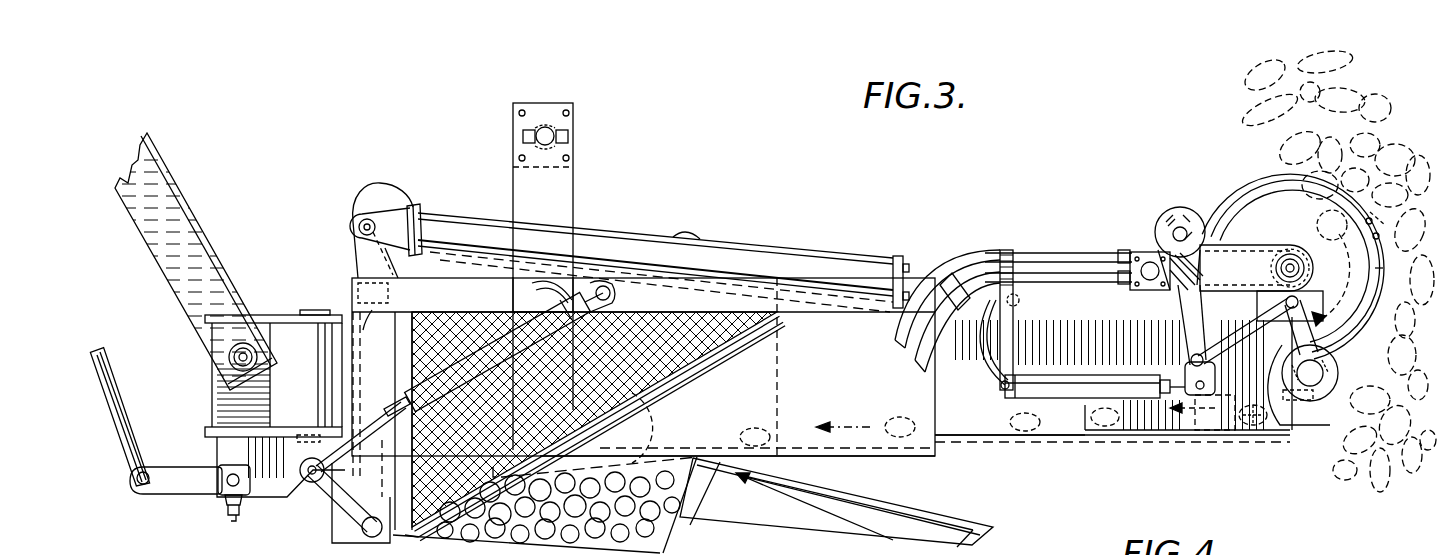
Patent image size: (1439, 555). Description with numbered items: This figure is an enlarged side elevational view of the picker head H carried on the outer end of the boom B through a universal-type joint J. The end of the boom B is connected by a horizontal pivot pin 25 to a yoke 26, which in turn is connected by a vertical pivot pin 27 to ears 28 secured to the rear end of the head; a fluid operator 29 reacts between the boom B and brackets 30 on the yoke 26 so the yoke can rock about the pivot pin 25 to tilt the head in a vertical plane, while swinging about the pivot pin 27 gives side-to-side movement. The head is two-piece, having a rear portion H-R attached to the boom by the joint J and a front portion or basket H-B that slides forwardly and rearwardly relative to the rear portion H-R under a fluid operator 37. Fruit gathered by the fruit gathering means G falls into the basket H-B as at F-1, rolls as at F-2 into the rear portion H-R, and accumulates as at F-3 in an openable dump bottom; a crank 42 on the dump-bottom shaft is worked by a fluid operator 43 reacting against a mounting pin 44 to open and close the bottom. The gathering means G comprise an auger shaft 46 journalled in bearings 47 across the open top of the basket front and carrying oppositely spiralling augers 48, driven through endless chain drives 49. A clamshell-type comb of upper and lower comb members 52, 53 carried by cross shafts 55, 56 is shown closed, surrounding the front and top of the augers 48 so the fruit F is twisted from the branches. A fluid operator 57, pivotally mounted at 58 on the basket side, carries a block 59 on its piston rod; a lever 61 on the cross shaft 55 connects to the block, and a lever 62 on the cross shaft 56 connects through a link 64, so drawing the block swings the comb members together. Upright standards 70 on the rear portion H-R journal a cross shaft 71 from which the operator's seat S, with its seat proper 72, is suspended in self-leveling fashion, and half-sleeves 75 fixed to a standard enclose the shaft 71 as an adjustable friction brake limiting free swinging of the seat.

The boom B is at (192, 214).
The universal-type joint J is at (245, 395).
The operator's seat S is at (388, 187).
The fruit F is at (1396, 240).
The fruit gathering means G is at (1377, 268).
The picker head H is at (808, 465).
The rear portion of the picker head H-R is at (860, 457).
The front portion or basket H-B is at (1005, 442).
The fruit falling into basket F-1 is at (1258, 436).
The fruit rolling into rear portion F-2 is at (906, 415).
The fruit accumulating in dump bottom F-3 is at (665, 535).
The horizontal pivot pin 25 is at (247, 357).
The yoke 26 is at (230, 418).
The vertical pivot pin 27 is at (312, 315).
The ears 28 is at (345, 338).
The fluid operator 29 is at (125, 428).
The brackets 30 is at (200, 484).
The fluid operator 37 is at (642, 245).
The crank 42 is at (340, 507).
The fluid operator 43 is at (507, 330).
The mounting pin 44 is at (606, 287).
The auger shaft 46 is at (1298, 260).
The bearings 47 is at (1284, 262).
The augers 48 is at (1368, 298).
The endless chain drives 49 is at (1233, 250).
The upper comb member 52 is at (1256, 178).
The lower comb member 53 is at (1390, 352).
The cross shaft 55 is at (1176, 222).
The cross shaft 56 is at (1310, 400).
The fluid operator 57 is at (1093, 410).
The pivotal mounting 58 is at (1000, 392).
The block 59 is at (1190, 425).
The lever 61 is at (1193, 344).
The lever 62 is at (1288, 366).
The link 64 is at (1222, 425).
The upright standards 70 is at (535, 197).
The cross shaft 71 is at (548, 120).
The seat proper 72 is at (408, 202).
The half-sleeves 75 is at (522, 130).